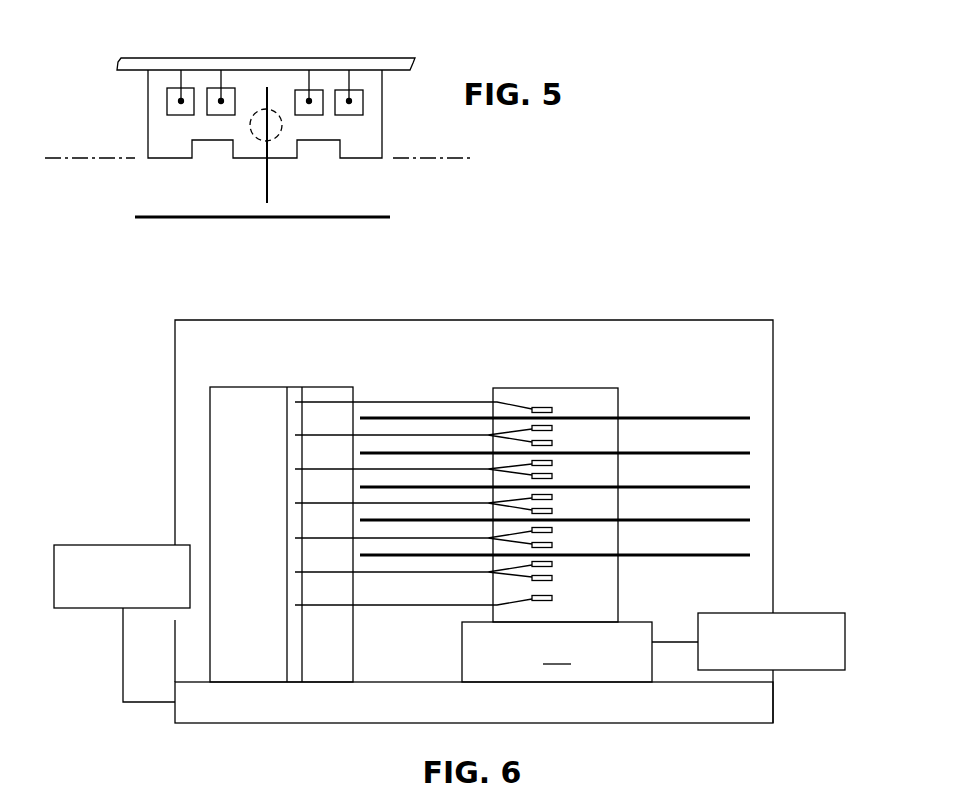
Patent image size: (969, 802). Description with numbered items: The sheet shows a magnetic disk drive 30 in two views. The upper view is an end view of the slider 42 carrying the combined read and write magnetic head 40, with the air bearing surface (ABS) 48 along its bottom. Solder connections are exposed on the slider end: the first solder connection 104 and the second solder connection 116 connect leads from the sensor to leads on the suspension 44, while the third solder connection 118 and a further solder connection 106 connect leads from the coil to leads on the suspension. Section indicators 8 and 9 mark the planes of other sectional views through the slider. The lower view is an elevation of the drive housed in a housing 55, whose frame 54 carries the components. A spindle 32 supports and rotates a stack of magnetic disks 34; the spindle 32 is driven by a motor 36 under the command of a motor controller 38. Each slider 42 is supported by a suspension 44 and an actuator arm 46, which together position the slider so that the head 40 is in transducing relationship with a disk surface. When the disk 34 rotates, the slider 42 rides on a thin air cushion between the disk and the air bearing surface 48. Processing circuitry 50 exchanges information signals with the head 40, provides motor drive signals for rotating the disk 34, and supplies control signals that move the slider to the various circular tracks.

In FIG. 5, the section line 8- 8 is at (155, 232).
In FIG. 5, the section line 9- 9 is at (280, 95).
In FIG. 6, the magnetic disk drive 30 is at (672, 386).
In FIG. 6, the spindle 32 is at (607, 387).
In FIG. 6, the magnetic disk 34 is at (750, 420).
In FIG. 6, the motor 36 is at (580, 652).
In FIG. 6, the motor controller 38 is at (805, 671).
In FIG. 5, the magnetic head 40 is at (258, 140).
In FIG. 5, the slider 42 is at (148, 100).
In FIG. 6, the slider 42 is at (552, 416).
In FIG. 6, the suspension 44 is at (521, 403).
In FIG. 6, the actuator arm 46 is at (463, 434).
In FIG. 5, the air bearing surface 48 is at (68, 158).
In FIG. 6, the processing circuitry 50 is at (95, 545).
In FIG. 6, the frame 54 is at (227, 718).
In FIG. 6, the housing 55 is at (712, 320).
In FIG. 5, the first solder connection 104 is at (167, 92).
In FIG. 5, the transducer 106 is at (337, 90).
In FIG. 5, the second solder connection 116 is at (208, 92).
In FIG. 5, the third solder connection 118 is at (297, 90).